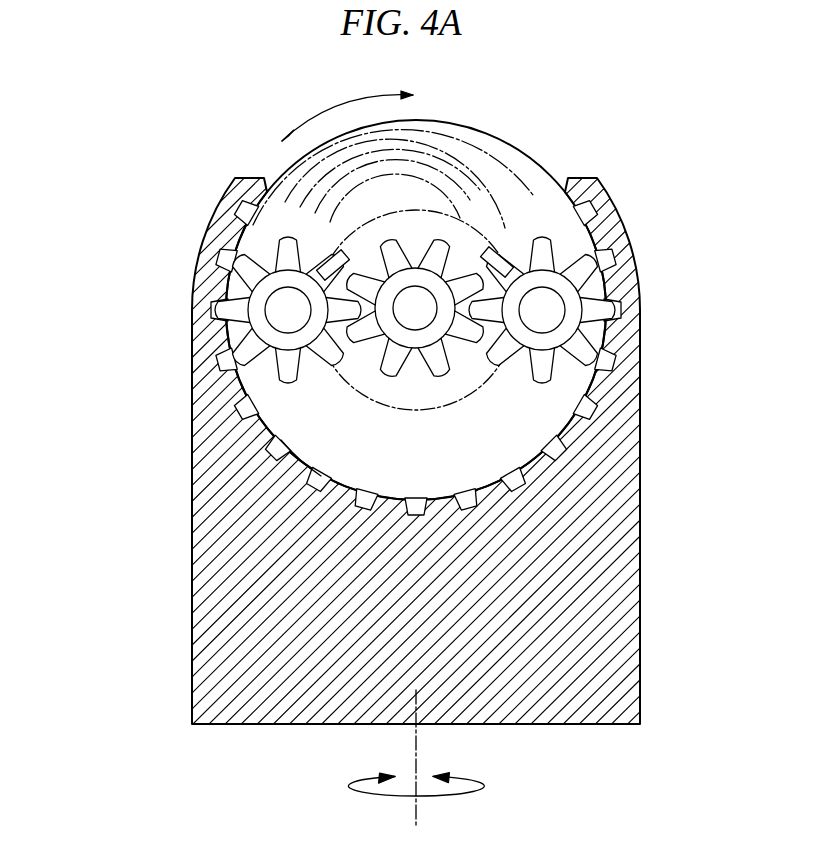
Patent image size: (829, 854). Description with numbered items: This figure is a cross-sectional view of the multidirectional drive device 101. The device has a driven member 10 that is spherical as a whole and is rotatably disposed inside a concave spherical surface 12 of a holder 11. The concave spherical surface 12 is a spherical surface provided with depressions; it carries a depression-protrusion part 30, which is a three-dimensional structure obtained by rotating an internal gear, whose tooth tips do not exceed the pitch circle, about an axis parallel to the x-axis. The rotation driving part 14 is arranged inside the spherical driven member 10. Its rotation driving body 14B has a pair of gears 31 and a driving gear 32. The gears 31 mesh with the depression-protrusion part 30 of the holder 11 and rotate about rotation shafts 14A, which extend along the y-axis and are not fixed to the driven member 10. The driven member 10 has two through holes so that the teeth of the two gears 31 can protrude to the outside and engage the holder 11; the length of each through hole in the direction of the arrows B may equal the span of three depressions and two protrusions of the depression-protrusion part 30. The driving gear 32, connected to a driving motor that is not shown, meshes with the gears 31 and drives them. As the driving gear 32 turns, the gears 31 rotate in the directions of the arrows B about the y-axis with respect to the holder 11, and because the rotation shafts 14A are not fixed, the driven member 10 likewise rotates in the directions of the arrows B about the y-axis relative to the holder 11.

The imaging apparatus 101 is at (187, 210).
The driven member 10 is at (462, 125).
The holder 11 is at (640, 560).
The concave spherical surface 12 is at (298, 440).
The rotation driving part 14 is at (380, 286).
The rotation shaft 14A is at (557, 303).
The rotation driving body 14B is at (272, 291).
The depression-protrusion part 30 is at (360, 494).
The gear 31 is at (386, 213).
The driving gear 32 is at (392, 393).